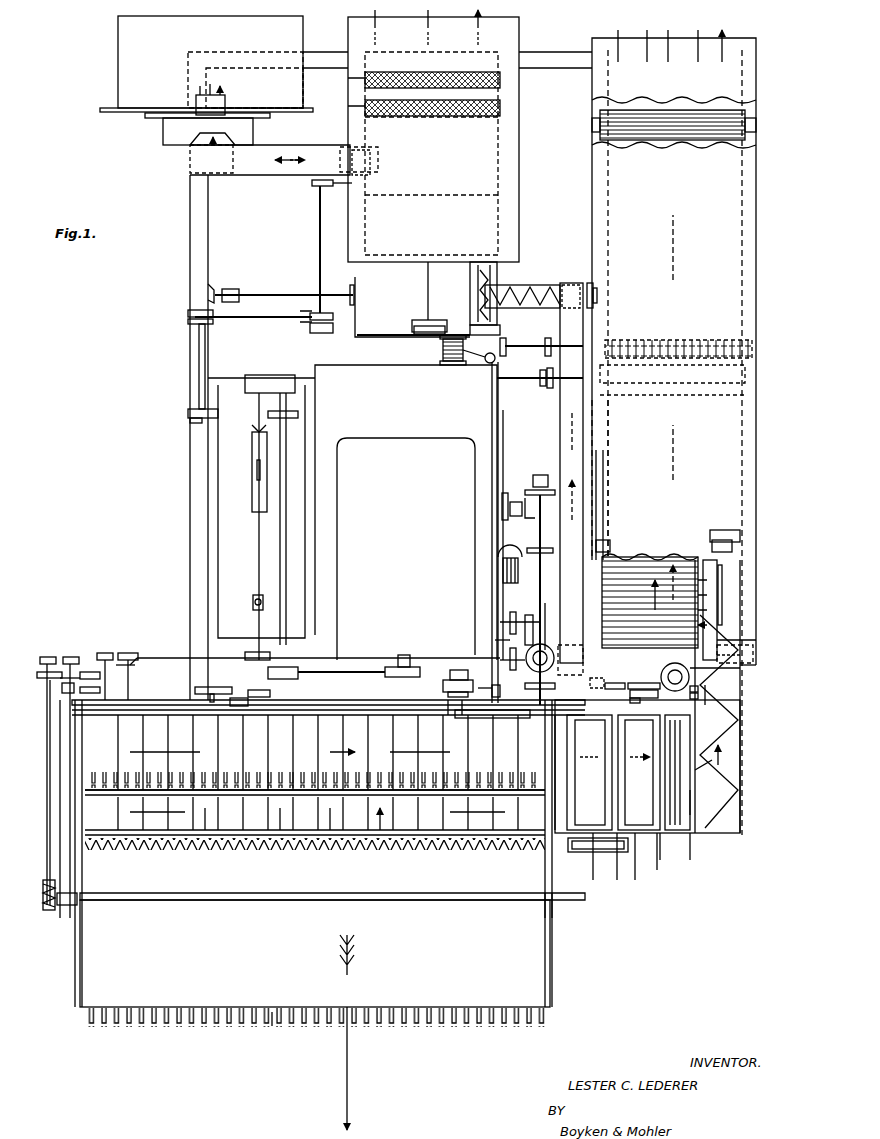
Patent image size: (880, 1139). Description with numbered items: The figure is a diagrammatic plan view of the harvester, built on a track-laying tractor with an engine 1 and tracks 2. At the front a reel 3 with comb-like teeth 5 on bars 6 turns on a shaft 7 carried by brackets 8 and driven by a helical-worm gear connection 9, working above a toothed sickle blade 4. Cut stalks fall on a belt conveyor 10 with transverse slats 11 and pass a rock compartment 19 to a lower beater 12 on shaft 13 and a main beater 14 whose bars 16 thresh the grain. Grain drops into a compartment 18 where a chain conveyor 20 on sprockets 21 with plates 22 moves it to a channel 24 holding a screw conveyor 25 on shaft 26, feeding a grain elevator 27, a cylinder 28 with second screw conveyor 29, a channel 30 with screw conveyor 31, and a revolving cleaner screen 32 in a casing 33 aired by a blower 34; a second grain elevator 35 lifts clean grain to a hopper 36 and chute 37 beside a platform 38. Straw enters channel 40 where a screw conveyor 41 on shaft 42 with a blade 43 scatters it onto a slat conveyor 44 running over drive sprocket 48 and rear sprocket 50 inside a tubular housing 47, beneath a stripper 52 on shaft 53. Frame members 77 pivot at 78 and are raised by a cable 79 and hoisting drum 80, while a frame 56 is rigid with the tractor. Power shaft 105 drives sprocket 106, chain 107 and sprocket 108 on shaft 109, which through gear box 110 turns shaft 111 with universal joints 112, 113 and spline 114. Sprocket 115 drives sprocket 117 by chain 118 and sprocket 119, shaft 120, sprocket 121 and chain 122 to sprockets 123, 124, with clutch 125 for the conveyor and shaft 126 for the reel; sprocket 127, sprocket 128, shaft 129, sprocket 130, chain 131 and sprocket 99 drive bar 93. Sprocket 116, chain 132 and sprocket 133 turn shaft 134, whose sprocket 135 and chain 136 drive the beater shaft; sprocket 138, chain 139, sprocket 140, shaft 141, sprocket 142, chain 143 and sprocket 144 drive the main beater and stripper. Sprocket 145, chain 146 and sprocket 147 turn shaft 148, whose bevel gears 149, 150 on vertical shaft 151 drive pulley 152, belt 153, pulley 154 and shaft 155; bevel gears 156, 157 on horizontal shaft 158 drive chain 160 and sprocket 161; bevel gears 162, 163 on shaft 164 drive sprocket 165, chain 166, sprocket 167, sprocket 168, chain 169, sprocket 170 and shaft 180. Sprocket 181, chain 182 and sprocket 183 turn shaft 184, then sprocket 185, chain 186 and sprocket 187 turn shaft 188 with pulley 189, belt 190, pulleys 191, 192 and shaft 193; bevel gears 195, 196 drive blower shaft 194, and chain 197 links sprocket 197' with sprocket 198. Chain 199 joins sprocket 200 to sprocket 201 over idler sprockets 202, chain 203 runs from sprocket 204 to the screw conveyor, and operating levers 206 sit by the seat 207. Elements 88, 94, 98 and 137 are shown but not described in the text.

The engine 1 is at (384, 440).
The tracks 2 is at (233, 378).
The reel 3 is at (143, 1010).
The sickle blade 4 is at (240, 840).
The comb-like teeth 5 is at (278, 1025).
The bars 6 is at (232, 1007).
The reel shaft 7 is at (150, 900).
The brackets 8 is at (72, 875).
The helical-worm gear connection 9 is at (48, 910).
The belt conveyor 10 is at (258, 840).
The transverse slats 11 is at (345, 845).
The lower beater 12 is at (594, 880).
The beater shaft 13 is at (590, 785).
The main beater 14 is at (635, 880).
The beater bars 16 is at (662, 840).
The grain receiving compartment 18 is at (692, 840).
The rock compartment 19 is at (617, 880).
The endless chain conveyor 20 is at (700, 790).
The sprockets 21 is at (700, 672).
The plates 22 is at (714, 774).
The channel 24 is at (745, 660).
The screw conveyor 25 is at (756, 655).
The revolving shaft 26 is at (755, 648).
The grain elevator 27 is at (560, 417).
The horizontal cylinder 28 is at (524, 286).
The second screw conveyor 29 is at (556, 286).
The channel 30 is at (470, 290).
The screw conveyor 31 is at (478, 279).
The cleaner screen 32 is at (500, 80).
The casing 33 is at (519, 135).
The blower 34 is at (357, 273).
The second grain elevator 35 is at (290, 147).
The grain receiving hopper 36 is at (165, 140).
The gate closed chute 37 is at (225, 102).
The platform 38 is at (127, 68).
The channel 40 is at (733, 712).
The screw conveyor 41 is at (722, 732).
The shaft 42 is at (715, 612).
The blade 43 is at (720, 590).
The slat conveyor 44 is at (728, 108).
The tubular housing 47 is at (740, 252).
The drive sprocket 48 is at (618, 378).
The rear sprocket 50 is at (592, 118).
The stripper 52 is at (705, 350).
The stripper shaft 53 is at (515, 346).
The frame 56 is at (208, 236).
The frame members 77 is at (190, 514).
The pivots 78 is at (186, 410).
The cable 79 is at (492, 396).
The hoisting drum 80 is at (450, 365).
The plate 88 is at (580, 852).
The bar 93 is at (160, 716).
The pin shelf 94 is at (283, 716).
The block 98 is at (238, 708).
The sprocket 99 is at (225, 687).
The power shaft 105 is at (418, 642).
The sprocket 106 is at (416, 655).
The chain 107 is at (375, 668).
The sprocket 108 is at (300, 667).
The shaft 109 is at (287, 450).
The gear box 110 is at (275, 375).
The shaft 111 is at (258, 531).
The universal joint 112 is at (252, 435).
The universal joint 113 is at (253, 602).
The spline 114 is at (252, 480).
The sprocket 115 is at (250, 650).
The sprocket 116 is at (250, 690).
The sprocket 117 is at (108, 652).
The chain 118 is at (173, 658).
The sprocket 119 is at (130, 652).
The shaft 120 is at (132, 668).
The sprocket 121 is at (135, 660).
The chain 122 is at (95, 670).
The sprocket 123 is at (72, 656).
The sprocket 124 is at (48, 656).
The clutch 125 is at (50, 690).
The shaft 126 is at (53, 700).
The sprocket 127 is at (40, 668).
The sprocket 128 is at (70, 676).
The shaft 129 is at (100, 684).
The sprocket 130 is at (75, 690).
The chain 131 is at (165, 700).
The chain 132 is at (305, 700).
The sprocket 133 is at (478, 688).
The shaft 134 is at (450, 672).
The sprocket 135 is at (452, 700).
The chain 136 is at (478, 700).
The wall 137 is at (555, 715).
The sprocket 138 is at (553, 681).
The chain 139 is at (619, 678).
The sprocket 140 is at (644, 683).
The shaft 141 is at (657, 870).
The sprocket 142 is at (630, 698).
The chain 143 is at (705, 696).
The sprocket 144 is at (705, 682).
The sprocket 145 is at (458, 680).
The chain 146 is at (494, 685).
The sprocket 147 is at (510, 718).
The shaft 148 is at (542, 518).
The bevel gear 149 is at (546, 622).
The bevel gear 150 is at (548, 648).
The vertical shaft 151 is at (533, 662).
The pulley 152 is at (556, 660).
The belt 153 is at (600, 678).
The pulley 154 is at (690, 680).
The shaft 155 is at (725, 640).
The bevel gear 156 is at (542, 608).
The bevel gear 157 is at (528, 615).
The horizontal shaft 158 is at (510, 618).
The chain 160 is at (500, 638).
The sprocket 161 is at (510, 655).
The bevel gear 162 is at (555, 468).
The bevel gear 163 is at (528, 496).
The shaft 164 is at (510, 510).
The sprocket 165 is at (500, 498).
The chain 166 is at (503, 465).
The sprocket 167 is at (504, 338).
The sprocket 168 is at (550, 338).
The chain 169 is at (553, 372).
The sprocket 170 is at (546, 386).
The shaft 180 is at (645, 386).
The sprocket 181 is at (300, 418).
The chain 182 is at (233, 405).
The sprocket 183 is at (192, 424).
The shaft 184 is at (199, 367).
The sprocket 185 is at (188, 322).
The chain 186 is at (257, 320).
The sprocket 187 is at (310, 308).
The shaft 188 is at (318, 253).
The pulley 189 is at (310, 330).
The belt 190 is at (348, 333).
The pulley 191 is at (476, 336).
The pulley 192 is at (426, 333).
The shaft 193 is at (426, 296).
The shaft 194 is at (270, 293).
The bevel gear 195 is at (216, 290).
The bevel gear 196 is at (206, 300).
The chain 197 is at (342, 198).
The sprocket 197' is at (382, 167).
The sprocket 198 is at (315, 186).
The chain 199 is at (605, 545).
The sprocket 200 is at (735, 530).
The sprocket 201 is at (553, 548).
The idler sprockets 202 is at (606, 540).
The chain 203 is at (598, 296).
The sprocket 204 is at (594, 290).
The operating levers 206 is at (503, 569).
The seat 207 is at (500, 546).